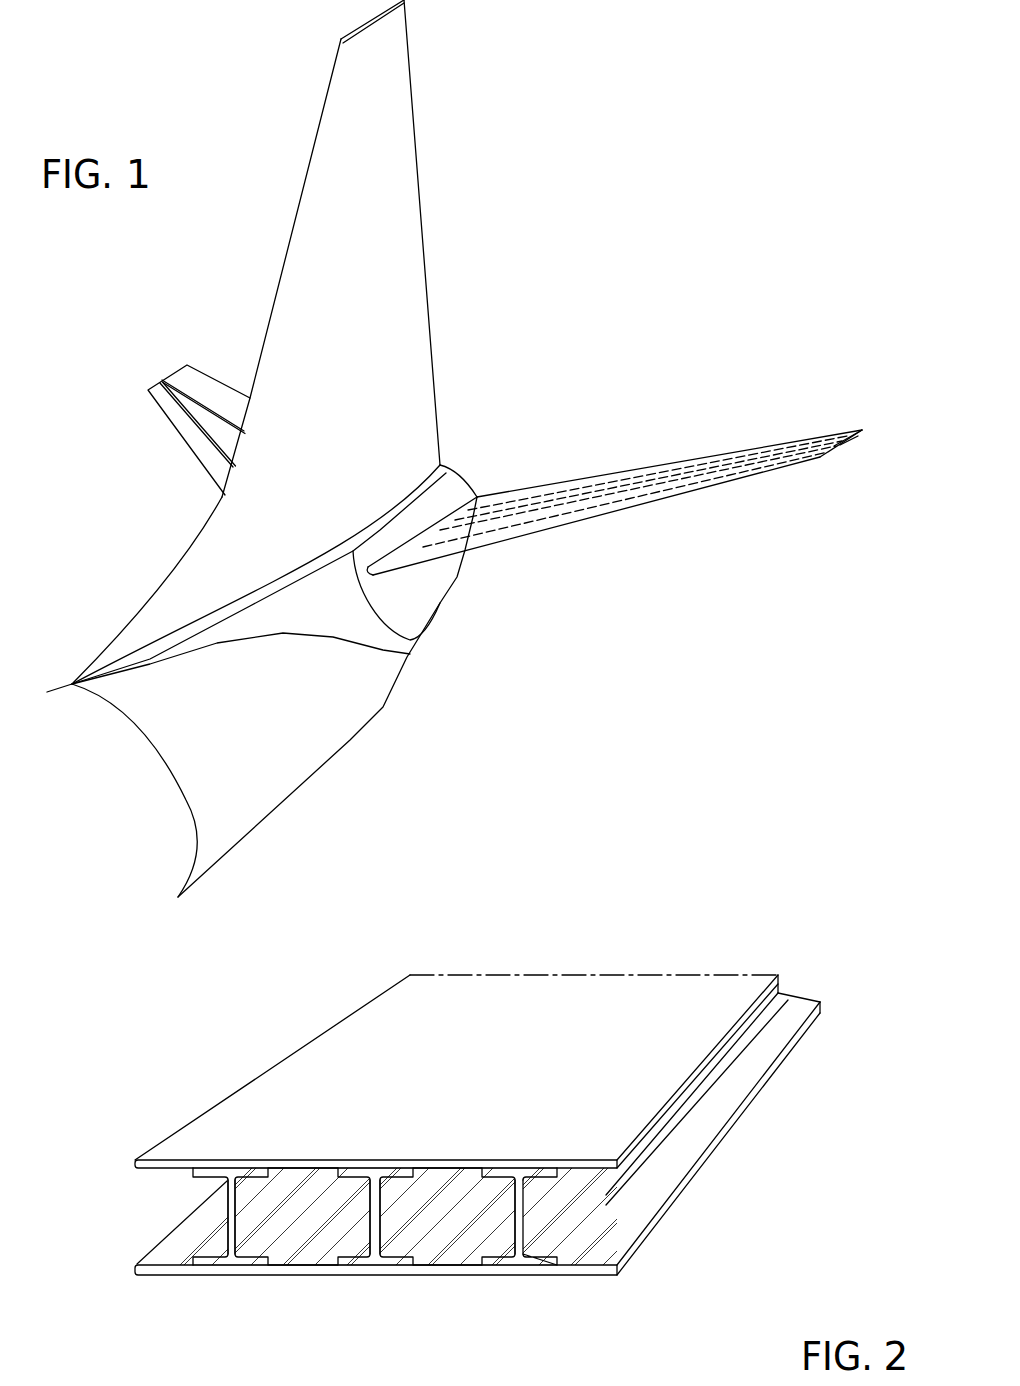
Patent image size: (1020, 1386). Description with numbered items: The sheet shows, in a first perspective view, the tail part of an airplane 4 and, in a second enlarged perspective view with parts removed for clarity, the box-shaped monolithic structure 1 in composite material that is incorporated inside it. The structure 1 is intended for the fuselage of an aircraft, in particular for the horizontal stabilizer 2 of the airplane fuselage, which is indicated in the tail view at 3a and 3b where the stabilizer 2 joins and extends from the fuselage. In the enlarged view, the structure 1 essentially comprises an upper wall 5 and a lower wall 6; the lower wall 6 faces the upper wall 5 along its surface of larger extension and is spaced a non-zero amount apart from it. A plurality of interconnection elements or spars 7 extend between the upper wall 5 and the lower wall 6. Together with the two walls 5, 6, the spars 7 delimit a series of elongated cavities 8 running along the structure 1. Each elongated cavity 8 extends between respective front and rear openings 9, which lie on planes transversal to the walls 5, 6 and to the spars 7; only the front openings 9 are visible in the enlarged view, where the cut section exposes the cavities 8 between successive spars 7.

In FIG. 1, the box-shaped monolithic structure 1 is at (848, 438).
In FIG. 2, the box-shaped monolithic structure 1 is at (470, 1089).
In FIG. 1, the horizontal stabilizer 2 is at (641, 477).
In FIG. 1, the root end of the tail plane 3a is at (465, 485).
In FIG. 1, the leading edge of the tail plane 3b is at (660, 495).
In FIG. 1, the airplane 4 is at (110, 575).
In FIG. 2, the upper wall 5 is at (612, 1012).
In FIG. 2, the lower wall 6 is at (490, 1272).
In FIG. 2, the interconnection elements or spars 7 is at (228, 1205).
In FIG. 2, the elongated cavities 8 is at (165, 1253).
In FIG. 2, the front and rear openings 9 is at (208, 1179).